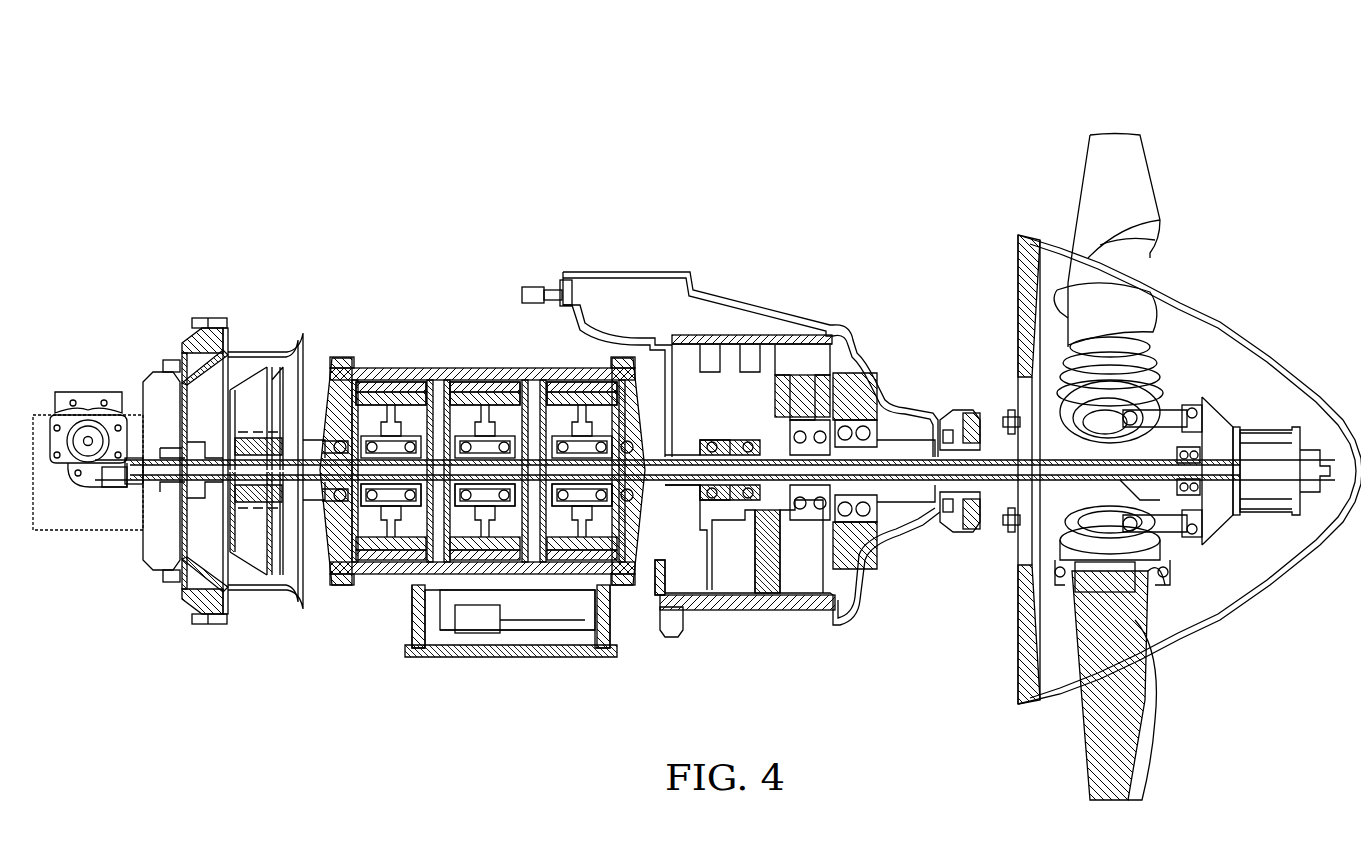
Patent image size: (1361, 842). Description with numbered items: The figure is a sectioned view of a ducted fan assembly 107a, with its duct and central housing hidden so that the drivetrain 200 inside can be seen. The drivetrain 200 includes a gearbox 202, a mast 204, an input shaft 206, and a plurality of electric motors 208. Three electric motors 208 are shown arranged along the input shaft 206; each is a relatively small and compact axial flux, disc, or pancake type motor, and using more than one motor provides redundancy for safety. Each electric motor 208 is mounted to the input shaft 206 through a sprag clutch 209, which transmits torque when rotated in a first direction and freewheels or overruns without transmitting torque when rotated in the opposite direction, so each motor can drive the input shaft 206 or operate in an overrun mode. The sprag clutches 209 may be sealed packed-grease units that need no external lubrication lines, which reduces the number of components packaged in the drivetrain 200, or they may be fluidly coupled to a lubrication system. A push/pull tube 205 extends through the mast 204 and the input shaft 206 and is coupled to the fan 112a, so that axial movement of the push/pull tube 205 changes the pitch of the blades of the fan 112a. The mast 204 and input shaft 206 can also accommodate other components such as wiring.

The drivetrain 200 is at (955, 86).
The gearbox 202 is at (745, 297).
The mast 204 is at (987, 448).
The push/pull tube 205 is at (987, 495).
The input shaft 206 is at (438, 455).
The electric motor 208 is at (405, 382).
The sprag clutch 209 is at (409, 508).
The ducted fan assembly 107a is at (1290, 244).
The fan 112a is at (1178, 702).